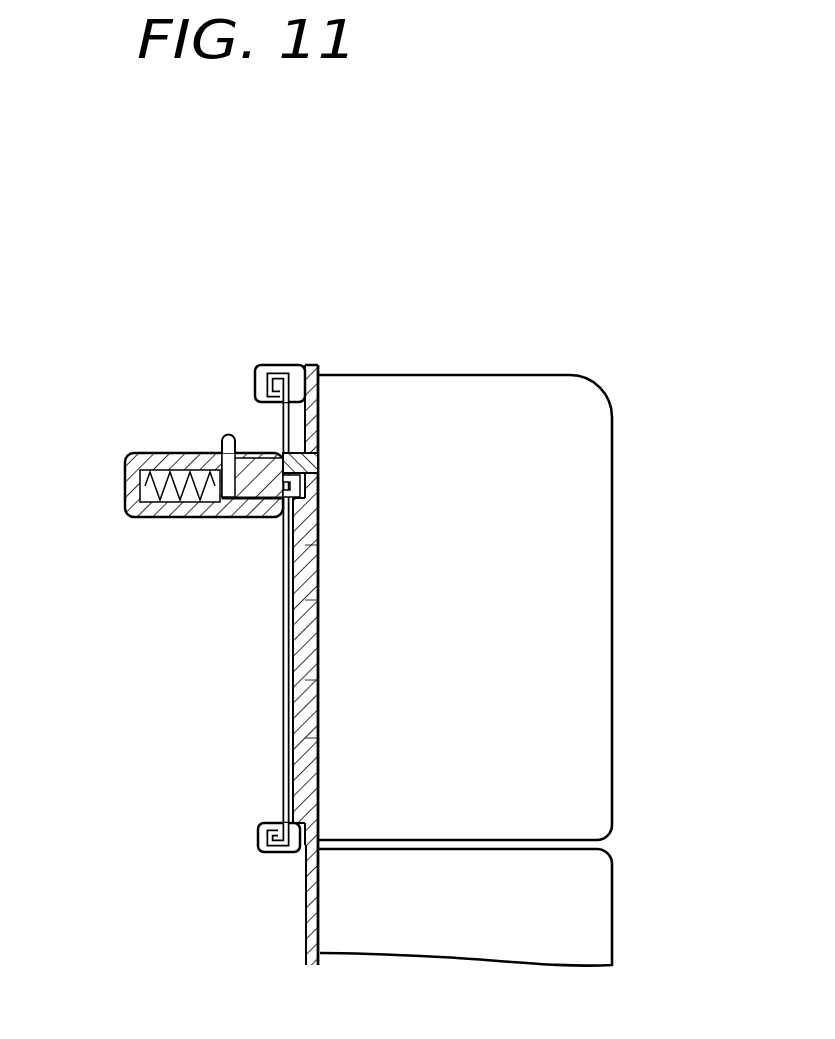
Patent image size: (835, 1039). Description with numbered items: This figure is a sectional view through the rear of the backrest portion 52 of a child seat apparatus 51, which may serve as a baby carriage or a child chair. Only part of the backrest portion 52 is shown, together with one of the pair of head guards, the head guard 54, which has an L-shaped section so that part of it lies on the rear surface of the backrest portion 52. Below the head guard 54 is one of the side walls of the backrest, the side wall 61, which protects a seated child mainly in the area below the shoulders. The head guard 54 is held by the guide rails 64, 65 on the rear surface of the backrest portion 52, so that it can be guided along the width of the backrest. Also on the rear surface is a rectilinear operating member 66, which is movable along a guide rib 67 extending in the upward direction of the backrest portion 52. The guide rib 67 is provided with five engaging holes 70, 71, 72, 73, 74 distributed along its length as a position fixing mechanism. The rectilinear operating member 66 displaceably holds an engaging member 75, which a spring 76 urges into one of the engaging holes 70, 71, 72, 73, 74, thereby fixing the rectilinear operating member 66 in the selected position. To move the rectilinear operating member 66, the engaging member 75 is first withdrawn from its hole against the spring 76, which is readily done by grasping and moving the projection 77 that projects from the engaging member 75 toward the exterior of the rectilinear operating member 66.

The child seat apparatus 51 is at (720, 294).
The backrest portion 52 is at (298, 953).
The head guard 54 is at (557, 370).
The side wall 61 is at (622, 933).
The guide rail 64 is at (268, 366).
The guide rail 65 is at (268, 858).
The rectilinear operating member 66 is at (125, 461).
The guide rib 67 is at (300, 648).
The engaging hole 70 is at (306, 740).
The engaging hole 71 is at (302, 683).
The engaging hole 72 is at (304, 605).
The engaging hole 73 is at (304, 551).
The engaging hole 74 is at (318, 470).
The engaging member 75 is at (235, 505).
The spring 76 is at (165, 454).
The projection 77 is at (226, 436).